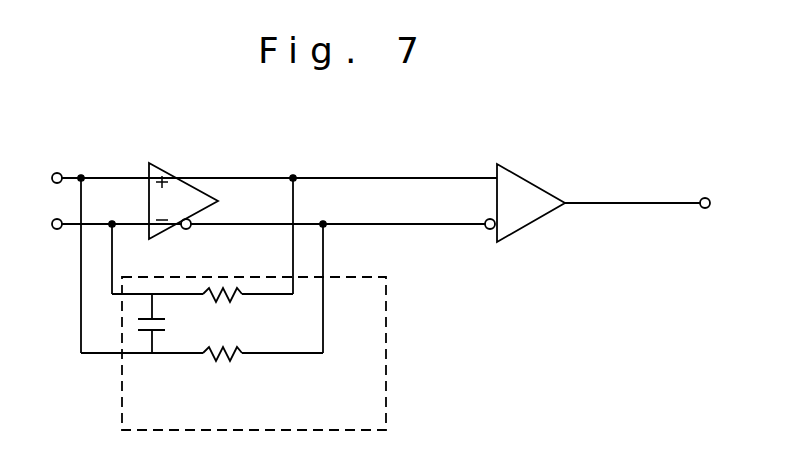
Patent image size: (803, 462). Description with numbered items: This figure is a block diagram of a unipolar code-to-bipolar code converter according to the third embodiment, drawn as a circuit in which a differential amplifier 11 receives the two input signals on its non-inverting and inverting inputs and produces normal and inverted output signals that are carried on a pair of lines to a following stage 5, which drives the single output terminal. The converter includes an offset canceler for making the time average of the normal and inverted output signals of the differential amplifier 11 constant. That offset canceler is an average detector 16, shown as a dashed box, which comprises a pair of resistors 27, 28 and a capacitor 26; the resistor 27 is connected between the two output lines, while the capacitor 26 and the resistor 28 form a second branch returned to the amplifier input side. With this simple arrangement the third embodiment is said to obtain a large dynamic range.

The amplifier 5 is at (530, 180).
The differential amplifier 11 is at (163, 170).
The average detector 16 is at (386, 352).
The capacitor 26 is at (135, 330).
The resistor 27 is at (228, 277).
The resistor 28 is at (222, 342).